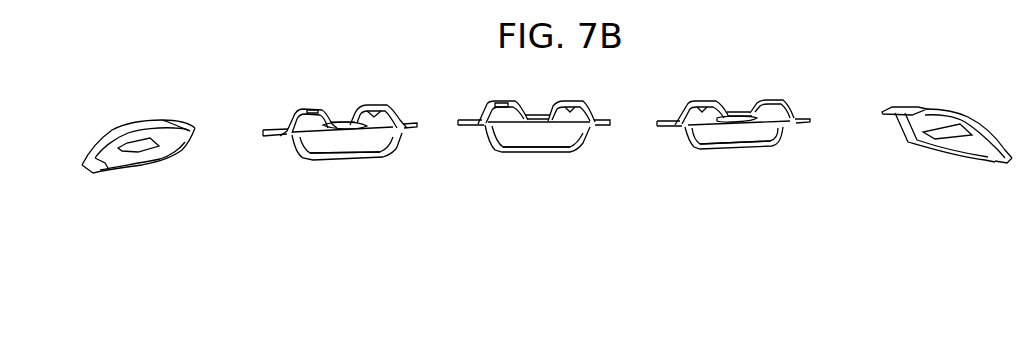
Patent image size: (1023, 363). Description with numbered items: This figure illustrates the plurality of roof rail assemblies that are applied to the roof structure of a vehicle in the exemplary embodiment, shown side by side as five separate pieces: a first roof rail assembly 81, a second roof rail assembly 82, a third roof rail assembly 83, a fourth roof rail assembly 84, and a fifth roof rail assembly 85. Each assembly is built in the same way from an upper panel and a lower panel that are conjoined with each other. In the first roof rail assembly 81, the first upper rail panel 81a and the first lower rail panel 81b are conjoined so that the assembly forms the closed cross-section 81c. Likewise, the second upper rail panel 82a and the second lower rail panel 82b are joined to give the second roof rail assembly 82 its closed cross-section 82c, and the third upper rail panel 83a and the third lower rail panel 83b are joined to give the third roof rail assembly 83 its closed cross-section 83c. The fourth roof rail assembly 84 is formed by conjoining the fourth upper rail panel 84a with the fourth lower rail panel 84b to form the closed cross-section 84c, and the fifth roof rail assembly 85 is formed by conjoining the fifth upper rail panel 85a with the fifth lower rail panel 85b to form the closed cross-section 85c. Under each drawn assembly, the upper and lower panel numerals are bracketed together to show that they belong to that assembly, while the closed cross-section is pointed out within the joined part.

The first roof rail assembly 81 is at (139, 193).
The first upper rail panel 81a is at (108, 172).
The first lower rail panel 81b is at (138, 165).
The closed cross-section 81c is at (156, 141).
The second roof rail assembly 82 is at (340, 185).
The second upper rail panel 82a is at (293, 140).
The second lower rail panel 82b is at (347, 155).
The closed cross-section 82c is at (367, 136).
The third roof rail assembly 83 is at (534, 179).
The third upper rail panel 83a is at (490, 123).
The third lower rail panel 83b is at (537, 152).
The closed cross-section 83c is at (554, 131).
The fourth roof rail assembly 84 is at (733, 179).
The fourth upper rail panel 84a is at (687, 127).
The fourth lower rail panel 84b is at (737, 150).
The closed cross-section 84c is at (754, 129).
The fifth roof rail assembly 85 is at (947, 180).
The fifth upper rail panel 85a is at (1002, 160).
The fifth lower rail panel 85b is at (943, 155).
The closed cross-section 85c is at (920, 123).